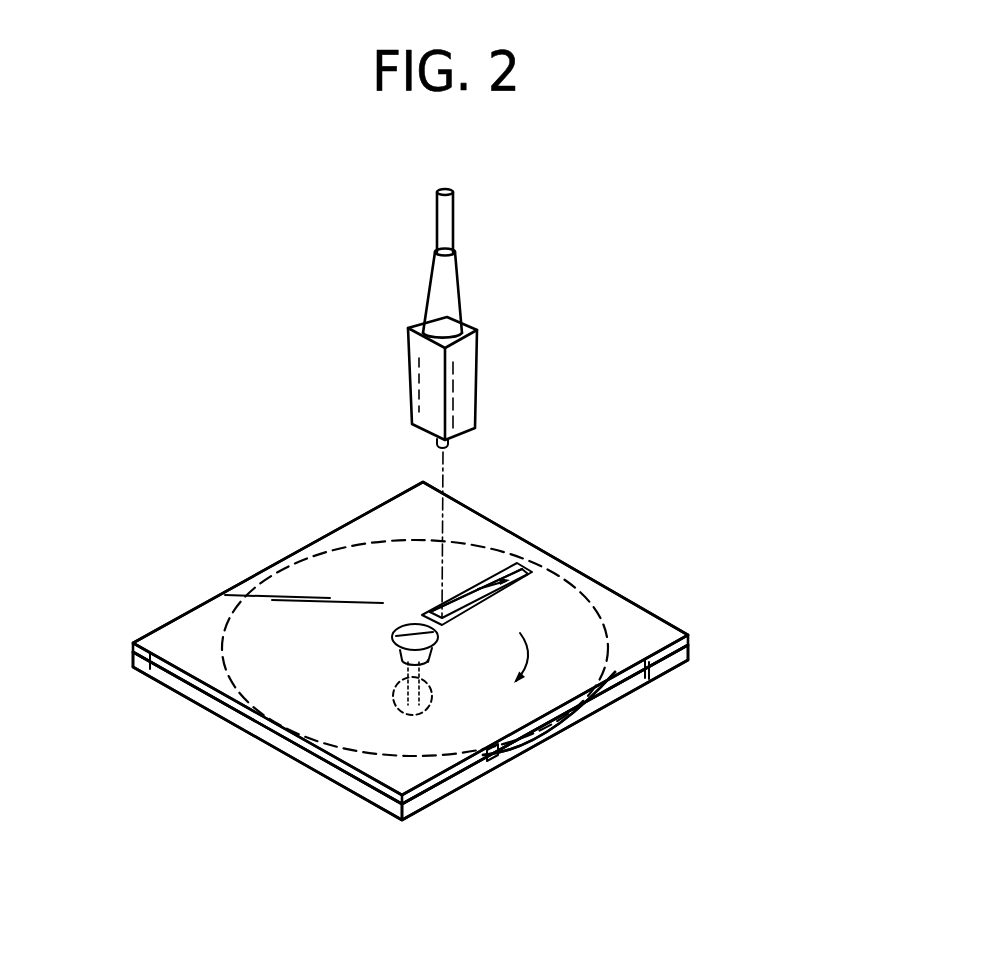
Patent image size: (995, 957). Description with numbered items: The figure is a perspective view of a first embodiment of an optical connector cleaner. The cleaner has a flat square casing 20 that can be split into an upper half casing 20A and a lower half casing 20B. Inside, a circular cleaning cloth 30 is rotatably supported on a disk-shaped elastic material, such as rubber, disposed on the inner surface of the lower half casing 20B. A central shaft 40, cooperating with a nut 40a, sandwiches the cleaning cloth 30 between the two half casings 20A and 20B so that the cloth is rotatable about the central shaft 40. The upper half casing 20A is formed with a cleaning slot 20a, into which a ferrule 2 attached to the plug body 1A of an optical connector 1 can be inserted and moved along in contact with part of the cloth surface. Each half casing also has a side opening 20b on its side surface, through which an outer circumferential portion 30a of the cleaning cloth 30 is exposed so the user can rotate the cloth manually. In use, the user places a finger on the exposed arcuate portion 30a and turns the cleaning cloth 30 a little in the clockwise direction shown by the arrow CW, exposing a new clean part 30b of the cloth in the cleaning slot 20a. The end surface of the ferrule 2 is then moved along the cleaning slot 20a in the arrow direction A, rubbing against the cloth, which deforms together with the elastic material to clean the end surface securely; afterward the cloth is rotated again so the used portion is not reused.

The optical connector 1 is at (592, 403).
The plug body 1A is at (467, 380).
The ferrule 2 is at (452, 445).
The casing 20 is at (465, 655).
The upper half casing 20A is at (630, 622).
The lower half casing 20B is at (684, 663).
The cleaning slot 20a is at (527, 573).
The side opening 20b is at (526, 736).
The cleaning cloth 30 is at (562, 634).
The outer circumferential portion 30a is at (555, 738).
The new clean part of the cleaning cloth 30b is at (481, 590).
The central shaft 40 is at (380, 664).
The nut 40a is at (393, 702).
The arrow direction A is at (492, 595).
The clockwise arrow CW is at (495, 670).